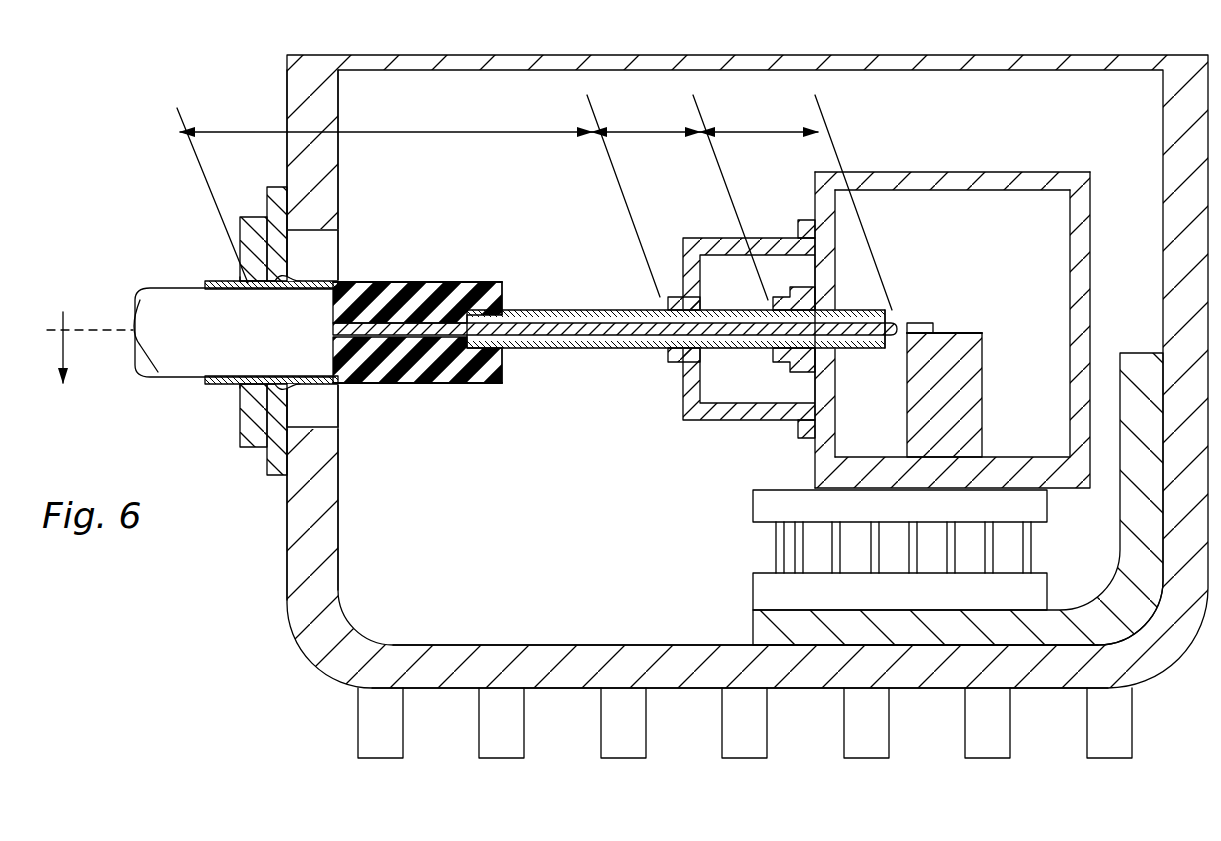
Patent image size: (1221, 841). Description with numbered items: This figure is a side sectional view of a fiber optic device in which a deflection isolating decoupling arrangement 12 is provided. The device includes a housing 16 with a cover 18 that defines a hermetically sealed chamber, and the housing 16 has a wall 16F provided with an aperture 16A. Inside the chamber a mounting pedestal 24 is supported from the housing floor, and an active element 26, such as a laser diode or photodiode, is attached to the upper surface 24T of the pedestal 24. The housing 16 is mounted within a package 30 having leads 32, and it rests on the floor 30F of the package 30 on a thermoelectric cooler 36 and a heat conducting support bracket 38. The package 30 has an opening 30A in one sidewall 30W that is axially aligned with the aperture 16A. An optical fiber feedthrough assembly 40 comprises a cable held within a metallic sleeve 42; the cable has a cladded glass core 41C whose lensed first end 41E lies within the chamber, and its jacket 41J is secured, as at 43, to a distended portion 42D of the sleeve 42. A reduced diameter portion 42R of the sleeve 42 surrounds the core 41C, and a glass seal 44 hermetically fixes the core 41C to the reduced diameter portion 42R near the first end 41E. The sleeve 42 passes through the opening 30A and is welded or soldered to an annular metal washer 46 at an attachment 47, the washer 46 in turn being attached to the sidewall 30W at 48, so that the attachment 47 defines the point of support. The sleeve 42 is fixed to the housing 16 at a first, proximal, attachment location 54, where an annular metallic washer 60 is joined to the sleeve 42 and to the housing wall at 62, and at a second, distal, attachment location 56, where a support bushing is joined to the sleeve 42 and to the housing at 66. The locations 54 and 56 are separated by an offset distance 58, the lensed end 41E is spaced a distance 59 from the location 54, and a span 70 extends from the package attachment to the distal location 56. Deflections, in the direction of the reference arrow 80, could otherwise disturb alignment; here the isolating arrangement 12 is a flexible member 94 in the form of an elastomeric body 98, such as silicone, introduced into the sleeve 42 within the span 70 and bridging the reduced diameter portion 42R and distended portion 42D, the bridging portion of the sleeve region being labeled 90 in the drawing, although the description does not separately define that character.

The deflection isolating decoupling arrangement 12 is at (546, 214).
The housing 16 is at (1107, 250).
The aperture 16A is at (840, 360).
The wall 16F is at (828, 420).
The cover 18 is at (950, 172).
The mounting pedestal 24 is at (965, 412).
The upper surface 24T is at (975, 333).
The active element 26 is at (928, 323).
The package 30 is at (278, 575).
The opening 30A is at (330, 412).
The sidewall 30W is at (320, 525).
The floor 30F is at (578, 668).
The leads 32 is at (340, 727).
The thermoelectric cooler 36 is at (748, 560).
The heat conducting support bracket 38 is at (770, 630).
The optical fiber feedthrough assembly 40 is at (577, 305).
The cladded glass core 41C is at (662, 312).
The first end 41E is at (896, 318).
The jacket 41J is at (175, 355).
The metallic sleeve 42 is at (548, 352).
The distended portion 42D is at (362, 283).
The reduced diameter portion 42R is at (577, 350).
The attachment of jacket to sleeve 43 is at (282, 312).
The glass seal 44 is at (858, 352).
The annular metal washer 46 is at (250, 435).
The attachment / point of support 47 is at (247, 383).
The attachment 48 is at (282, 472).
The first, proximal, attachment location 54 is at (768, 360).
The second, distal, attachment location 56 is at (665, 352).
The offset distance 58 is at (663, 130).
The distance 59 is at (775, 130).
The annular metallic washer 60 is at (787, 300).
The attachment 62 is at (805, 408).
The attachment 66 is at (815, 440).
The span 70 is at (463, 130).
The reference arrow 80 is at (66, 350).
The bushing 90 is at (440, 282).
The flexible member 94 is at (512, 297).
The elastomeric body 98 is at (455, 385).